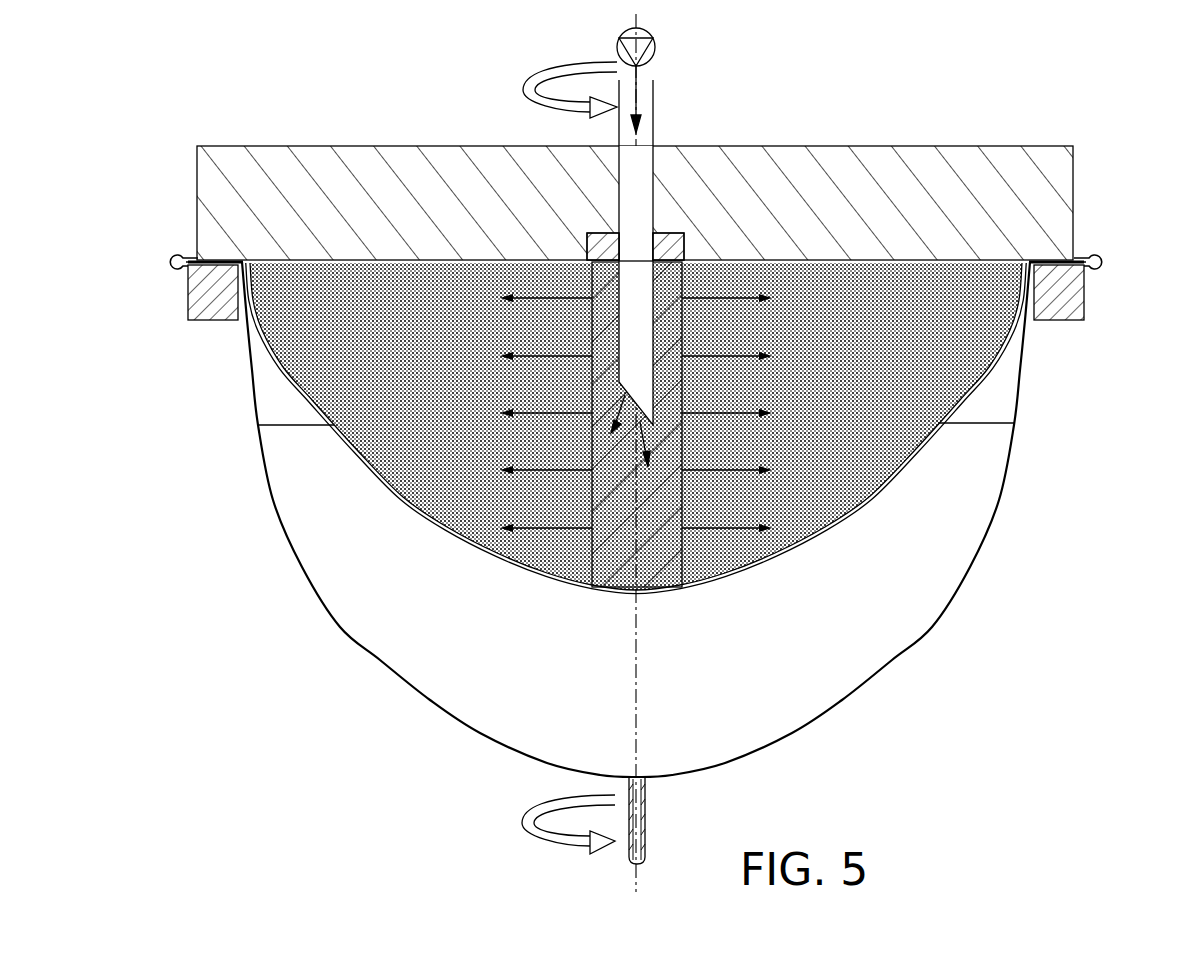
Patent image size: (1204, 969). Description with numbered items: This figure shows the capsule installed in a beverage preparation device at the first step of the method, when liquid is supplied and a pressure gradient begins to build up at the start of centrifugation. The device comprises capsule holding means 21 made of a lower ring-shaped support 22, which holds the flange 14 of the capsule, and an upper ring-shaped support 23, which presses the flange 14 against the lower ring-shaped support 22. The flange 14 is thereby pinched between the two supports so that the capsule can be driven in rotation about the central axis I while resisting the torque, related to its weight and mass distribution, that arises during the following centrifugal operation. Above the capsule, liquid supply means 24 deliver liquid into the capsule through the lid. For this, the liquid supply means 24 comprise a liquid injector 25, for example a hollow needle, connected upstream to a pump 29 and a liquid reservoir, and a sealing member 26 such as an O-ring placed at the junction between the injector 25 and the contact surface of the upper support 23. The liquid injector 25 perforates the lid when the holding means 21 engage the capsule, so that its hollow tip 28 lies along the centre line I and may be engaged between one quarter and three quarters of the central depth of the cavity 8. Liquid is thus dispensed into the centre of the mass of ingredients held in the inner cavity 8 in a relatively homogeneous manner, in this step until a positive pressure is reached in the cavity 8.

The capsule holding means 21 is at (1122, 199).
The upper ring-shaped support 23 is at (1000, 158).
The lower ring-shaped support 22 is at (1062, 321).
The flange 14 is at (1108, 262).
The cavity 8 is at (928, 453).
The liquid supply means 24 is at (779, 27).
The liquid injector 25 is at (653, 182).
The sealing member 26 is at (686, 236).
The pump 29 is at (656, 51).
The hollow tip 28 is at (682, 385).
The central axis I is at (638, 882).